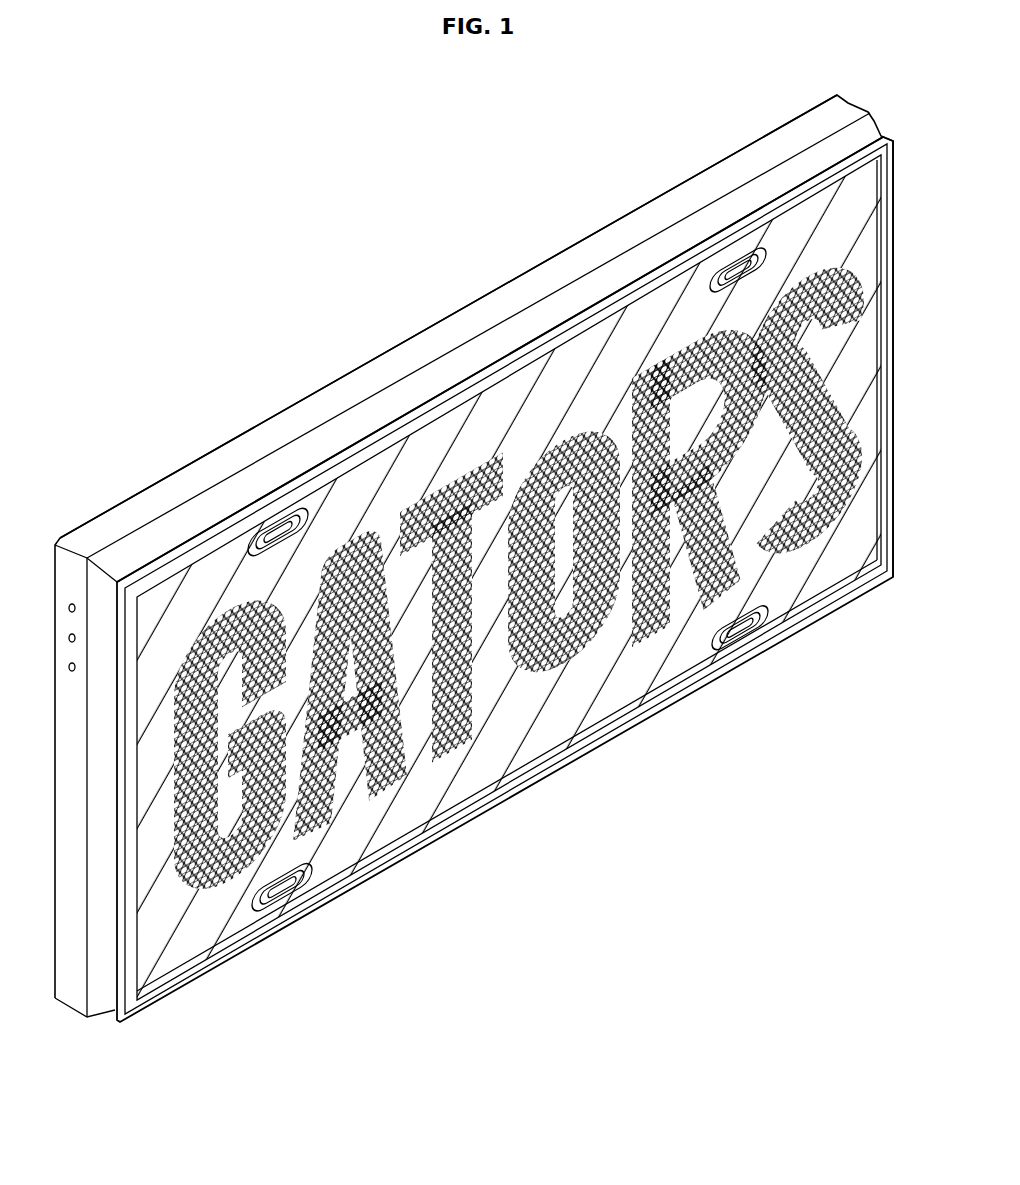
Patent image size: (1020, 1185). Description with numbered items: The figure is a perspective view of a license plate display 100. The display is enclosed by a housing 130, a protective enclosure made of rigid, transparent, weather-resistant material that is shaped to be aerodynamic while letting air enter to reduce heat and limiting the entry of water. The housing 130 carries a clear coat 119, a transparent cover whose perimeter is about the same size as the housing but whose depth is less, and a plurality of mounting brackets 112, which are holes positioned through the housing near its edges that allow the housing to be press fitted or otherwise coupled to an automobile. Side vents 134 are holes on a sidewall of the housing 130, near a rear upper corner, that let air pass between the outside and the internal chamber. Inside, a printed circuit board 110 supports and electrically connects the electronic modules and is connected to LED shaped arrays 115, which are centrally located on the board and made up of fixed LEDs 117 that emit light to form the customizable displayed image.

The license plate display 100 is at (300, 405).
The printed circuit board 110 is at (625, 692).
The mounting brackets 112 is at (735, 265).
The LED shaped arrays 115 is at (325, 830).
The fixed LEDs 117 is at (470, 748).
The clear coat 119 is at (595, 715).
The housing 130 is at (470, 320).
The side vents 134 is at (72, 605).